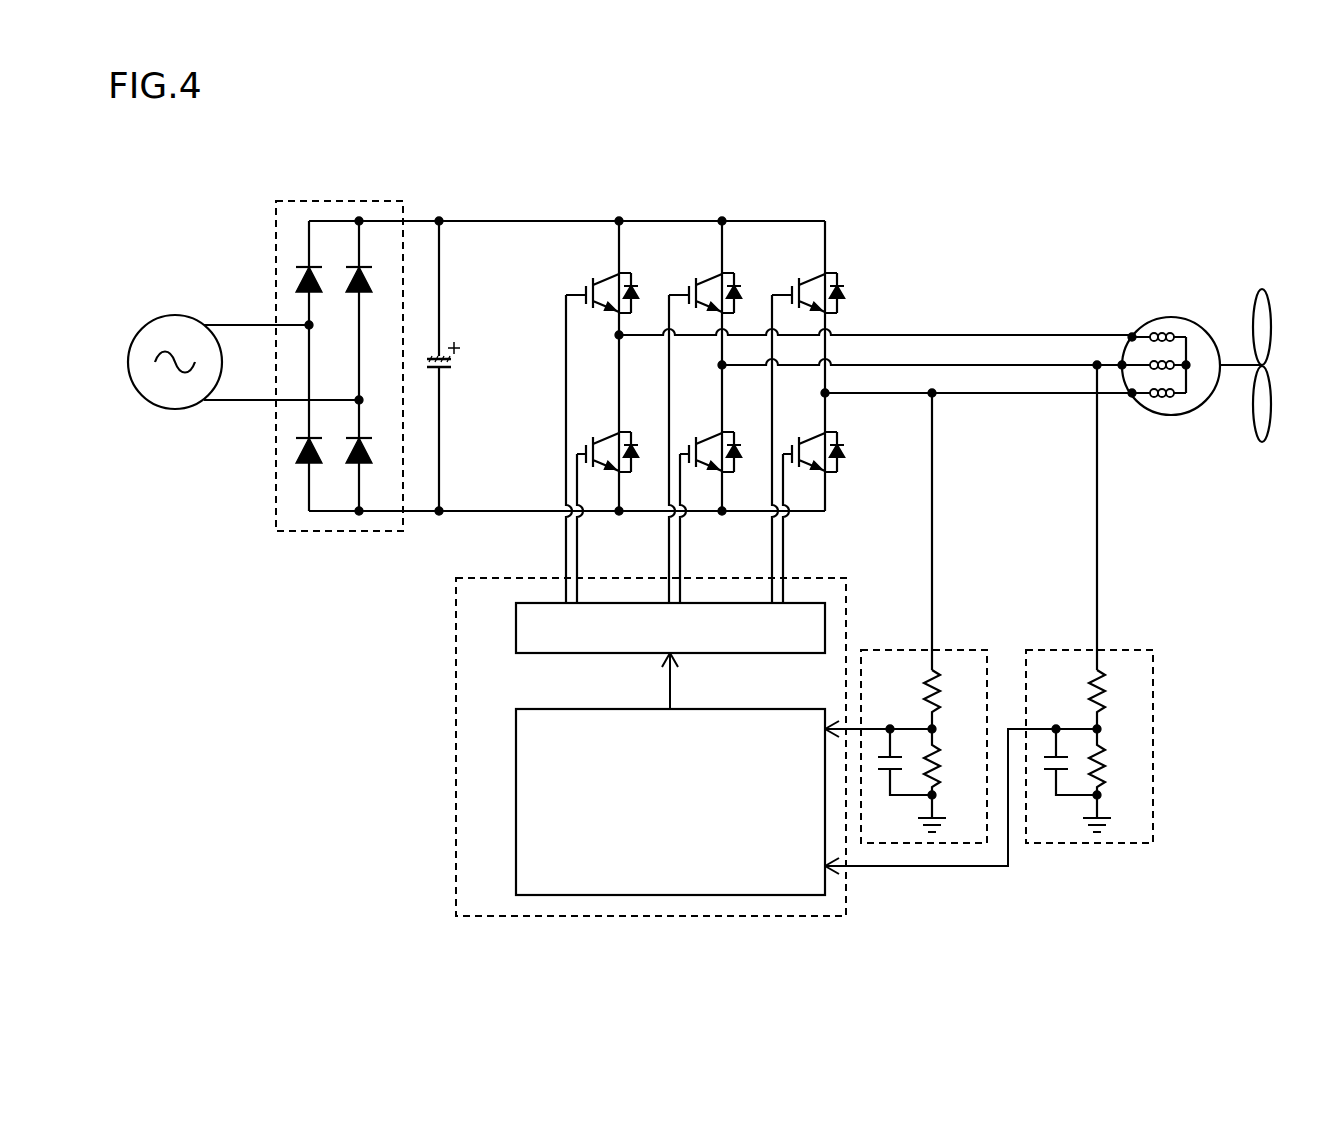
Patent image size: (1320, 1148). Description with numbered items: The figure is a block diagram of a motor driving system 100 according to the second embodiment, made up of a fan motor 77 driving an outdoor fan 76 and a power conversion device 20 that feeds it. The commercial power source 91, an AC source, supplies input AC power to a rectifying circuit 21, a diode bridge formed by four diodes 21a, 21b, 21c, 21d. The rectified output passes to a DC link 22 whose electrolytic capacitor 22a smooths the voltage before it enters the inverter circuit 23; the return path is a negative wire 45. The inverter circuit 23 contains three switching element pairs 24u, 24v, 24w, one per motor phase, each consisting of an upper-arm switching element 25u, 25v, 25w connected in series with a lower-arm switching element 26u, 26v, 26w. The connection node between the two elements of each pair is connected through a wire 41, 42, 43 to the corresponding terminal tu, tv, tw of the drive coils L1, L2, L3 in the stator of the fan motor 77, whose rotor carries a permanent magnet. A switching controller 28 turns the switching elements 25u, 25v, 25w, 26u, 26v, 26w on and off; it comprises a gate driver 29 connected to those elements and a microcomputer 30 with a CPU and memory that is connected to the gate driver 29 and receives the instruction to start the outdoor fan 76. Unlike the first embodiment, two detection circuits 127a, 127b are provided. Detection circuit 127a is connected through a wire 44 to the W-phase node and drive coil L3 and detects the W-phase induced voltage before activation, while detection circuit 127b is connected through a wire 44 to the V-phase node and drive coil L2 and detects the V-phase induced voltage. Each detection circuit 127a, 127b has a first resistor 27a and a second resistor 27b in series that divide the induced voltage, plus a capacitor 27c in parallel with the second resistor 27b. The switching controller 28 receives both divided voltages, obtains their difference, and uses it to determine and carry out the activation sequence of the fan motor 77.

The motor driving system 100 is at (1090, 140).
The power conversion device 20 is at (861, 176).
The rectifying circuit 21 is at (304, 200).
The diode 21a is at (298, 282).
The diode 21b is at (296, 455).
The diode 21c is at (368, 284).
The diode 21d is at (346, 462).
The DC link 22 is at (439, 215).
The electrolytic capacitor 22a is at (447, 368).
The inverter circuit 23 is at (758, 214).
The switching element pair 24u is at (574, 290).
The switching element pair 24v is at (677, 290).
The switching element pair 24w is at (780, 290).
The upper-arm switching element 25u is at (606, 278).
The upper-arm switching element 25v is at (709, 278).
The upper-arm switching element 25w is at (812, 278).
The lower-arm switching element 26u is at (606, 440).
The lower-arm switching element 26v is at (709, 440).
The lower-arm switching element 26w is at (812, 444).
The first resistor 27a is at (942, 688).
The second resistor 27b is at (942, 762).
The capacitor 27c is at (886, 774).
The detection circuit 127a is at (962, 650).
The detection circuit 127b is at (1127, 650).
The switching controller 28 is at (456, 662).
The gate driver 29 is at (516, 632).
The microcomputer 30 is at (516, 802).
The wire 41 is at (900, 335).
The wire 42 is at (922, 363).
The wire 43 is at (905, 397).
The wire 44 is at (934, 522).
The negative wire 45 is at (506, 514).
The outdoor fan 76 is at (1263, 292).
The fan motor 77 is at (1166, 318).
The commercial power source 91 is at (172, 313).
The drive coil L1 is at (1172, 331).
The drive coil L2 is at (1170, 370).
The drive coil L3 is at (1170, 398).
The terminal tu is at (1131, 333).
The terminal tv is at (1120, 368).
The terminal tw is at (1132, 396).